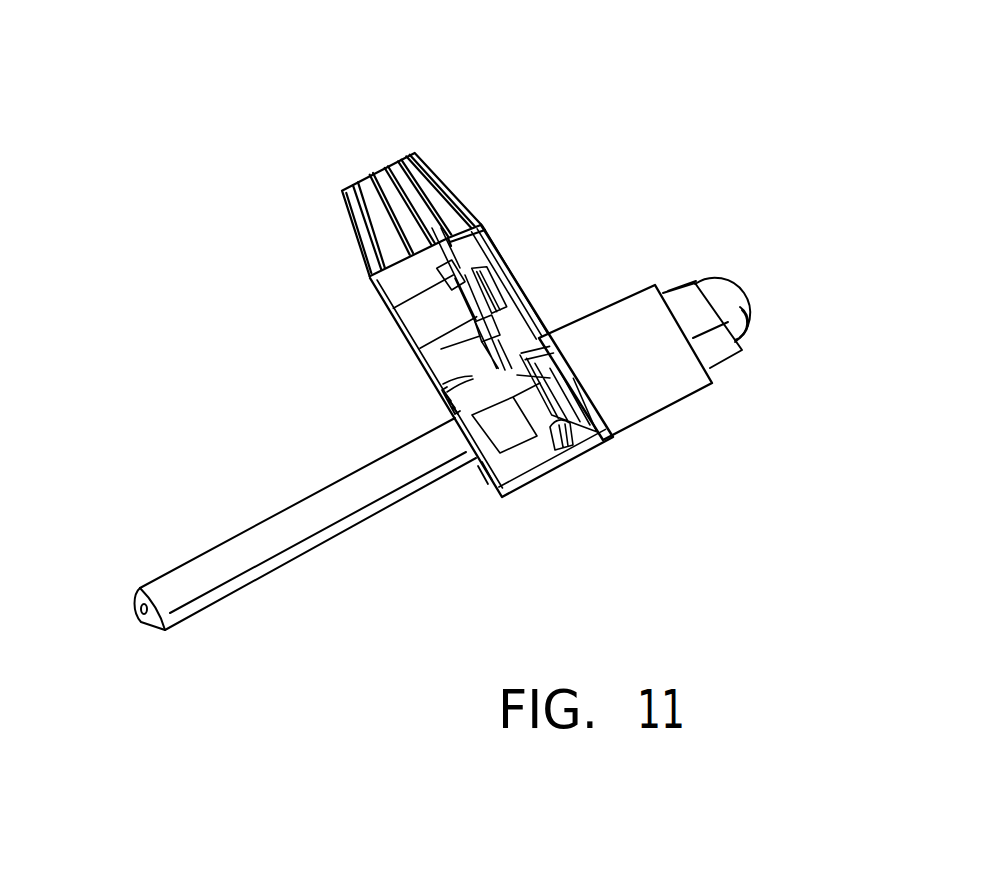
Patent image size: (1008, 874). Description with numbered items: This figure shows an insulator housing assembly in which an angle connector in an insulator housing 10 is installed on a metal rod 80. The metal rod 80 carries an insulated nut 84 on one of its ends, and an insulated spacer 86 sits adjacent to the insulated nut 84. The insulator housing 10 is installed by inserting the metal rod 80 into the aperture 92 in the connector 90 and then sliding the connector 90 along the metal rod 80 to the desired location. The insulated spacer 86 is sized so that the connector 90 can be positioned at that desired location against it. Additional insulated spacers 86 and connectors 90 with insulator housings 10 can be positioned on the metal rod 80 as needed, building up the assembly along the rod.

The insulator housing 10 is at (453, 128).
The metal rod 80 is at (255, 527).
The insulated nut 84 is at (747, 297).
The insulated spacer 86 is at (663, 410).
The connector 90 is at (445, 397).
The aperture 92 is at (483, 462).